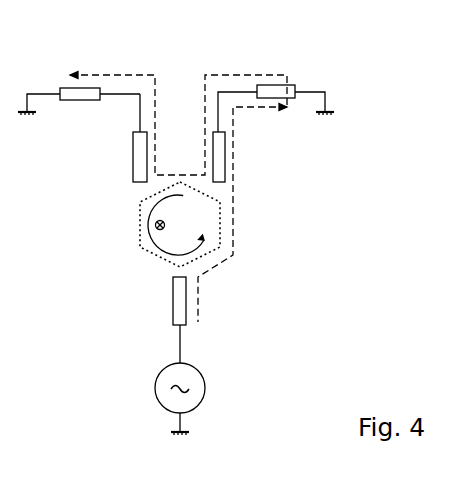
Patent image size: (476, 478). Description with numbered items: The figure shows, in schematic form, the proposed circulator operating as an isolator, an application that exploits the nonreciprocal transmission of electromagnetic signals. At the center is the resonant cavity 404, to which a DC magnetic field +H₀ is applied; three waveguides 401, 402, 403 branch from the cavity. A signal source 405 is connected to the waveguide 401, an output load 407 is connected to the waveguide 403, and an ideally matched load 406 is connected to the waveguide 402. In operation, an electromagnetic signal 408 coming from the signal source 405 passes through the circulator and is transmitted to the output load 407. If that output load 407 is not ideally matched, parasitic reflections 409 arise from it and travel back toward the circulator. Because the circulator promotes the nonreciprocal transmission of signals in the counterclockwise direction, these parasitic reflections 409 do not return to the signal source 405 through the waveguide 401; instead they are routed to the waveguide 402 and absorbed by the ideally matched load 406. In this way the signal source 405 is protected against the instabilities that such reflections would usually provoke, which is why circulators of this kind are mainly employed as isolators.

The waveguide 401 is at (170, 293).
The waveguide 402 is at (130, 157).
The waveguide 403 is at (227, 157).
The resonant cavity 404 is at (135, 222).
The signal source 405 is at (207, 388).
The ideally matched load 406 is at (60, 82).
The output load 407 is at (298, 82).
The electromagnetic signal 408 is at (238, 223).
The parasitic reflections 409 is at (228, 72).